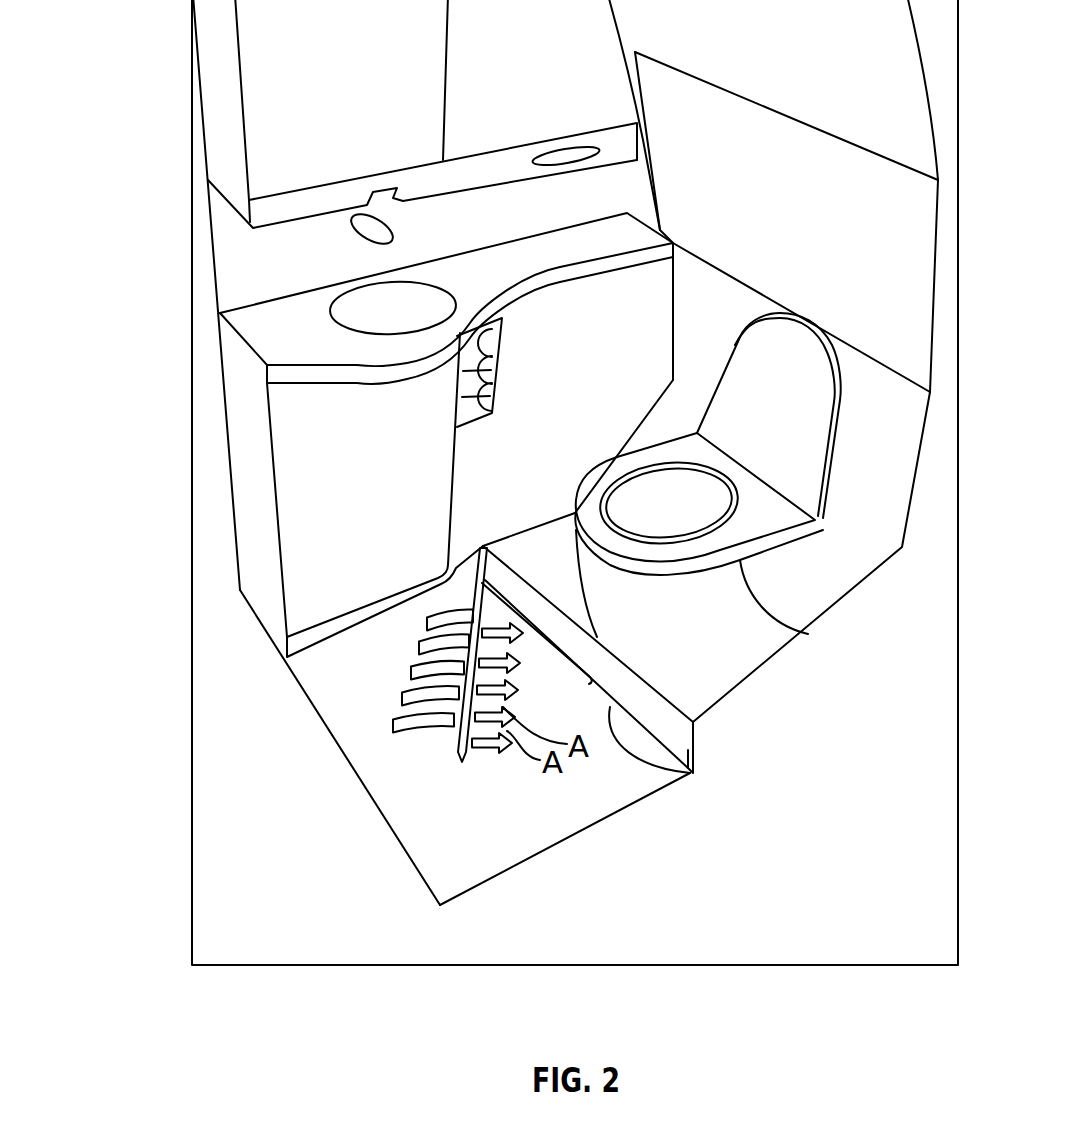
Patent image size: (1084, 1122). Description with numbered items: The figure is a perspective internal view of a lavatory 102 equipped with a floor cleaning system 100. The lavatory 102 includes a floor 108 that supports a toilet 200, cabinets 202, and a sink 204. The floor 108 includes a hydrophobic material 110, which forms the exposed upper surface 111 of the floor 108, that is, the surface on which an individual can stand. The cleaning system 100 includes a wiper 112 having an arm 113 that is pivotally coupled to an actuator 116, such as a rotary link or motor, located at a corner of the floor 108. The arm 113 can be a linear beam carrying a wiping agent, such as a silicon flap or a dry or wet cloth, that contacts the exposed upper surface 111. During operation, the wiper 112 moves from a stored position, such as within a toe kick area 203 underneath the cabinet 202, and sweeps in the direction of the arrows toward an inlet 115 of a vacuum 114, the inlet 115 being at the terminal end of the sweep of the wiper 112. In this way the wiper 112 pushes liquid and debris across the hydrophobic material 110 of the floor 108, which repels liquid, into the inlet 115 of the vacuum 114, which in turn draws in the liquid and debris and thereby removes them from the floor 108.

The cleaning system 100 is at (660, 838).
The lavatory 102 is at (142, 48).
The floor 108 is at (567, 831).
The hydrophobic material 110 is at (650, 770).
The exposed upper surface 111 is at (490, 858).
The wiper 112 is at (483, 575).
The arm 113 is at (518, 665).
The vacuum 114 is at (675, 708).
The inlet 115 is at (693, 755).
The actuator 116 is at (484, 580).
The toilet 200 is at (737, 560).
The cabinets 202 is at (417, 465).
The toe kick area 203 is at (307, 640).
The sink 204 is at (427, 303).